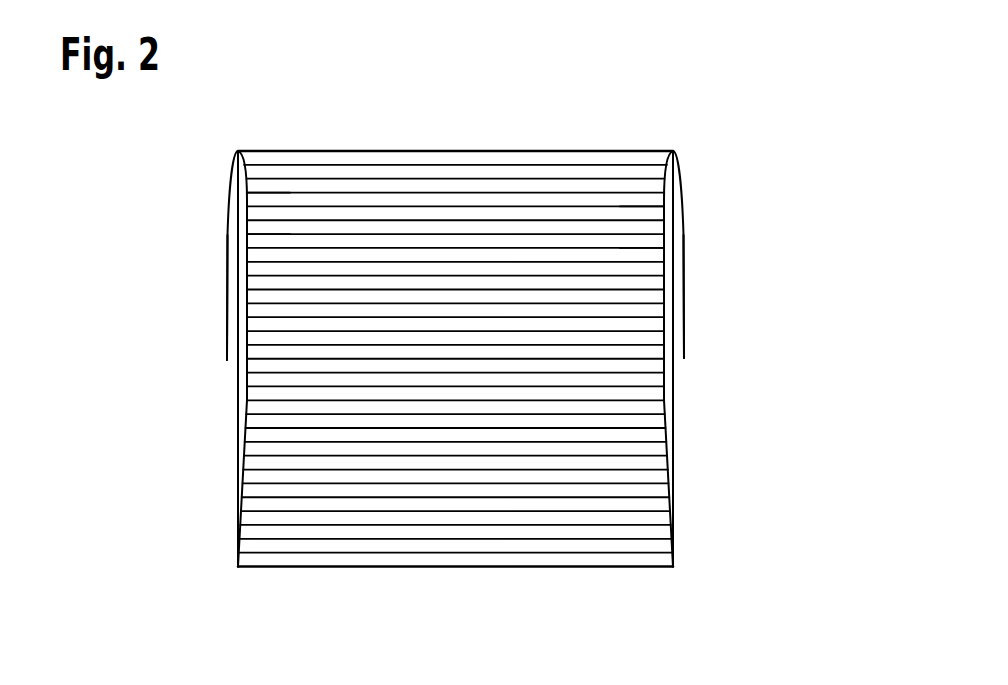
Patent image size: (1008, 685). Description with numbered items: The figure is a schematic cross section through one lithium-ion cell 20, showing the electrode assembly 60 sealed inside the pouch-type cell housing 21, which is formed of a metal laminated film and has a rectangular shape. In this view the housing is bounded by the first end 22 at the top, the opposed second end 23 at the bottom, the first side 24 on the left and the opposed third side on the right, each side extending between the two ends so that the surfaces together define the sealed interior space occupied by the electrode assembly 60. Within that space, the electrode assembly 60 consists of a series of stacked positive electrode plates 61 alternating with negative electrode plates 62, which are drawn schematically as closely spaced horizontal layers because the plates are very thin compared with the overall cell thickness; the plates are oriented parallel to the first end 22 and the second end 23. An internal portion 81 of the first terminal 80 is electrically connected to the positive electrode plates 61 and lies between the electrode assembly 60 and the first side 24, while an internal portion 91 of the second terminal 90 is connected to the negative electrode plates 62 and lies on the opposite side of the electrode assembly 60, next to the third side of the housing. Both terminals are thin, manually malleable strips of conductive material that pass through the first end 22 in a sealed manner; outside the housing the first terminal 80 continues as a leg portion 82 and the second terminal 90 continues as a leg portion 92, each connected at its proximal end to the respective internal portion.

The cell 20 is at (172, 157).
The cell housing 21 is at (673, 437).
The first end 22 is at (619, 151).
The second end 23 is at (622, 567).
The first side 24 is at (238, 414).
The electrode assembly 60 is at (323, 540).
The positive electrode plates 61 is at (627, 218).
The negative electrode plates 62 is at (283, 203).
The first terminal 80 is at (228, 288).
The internal portion of first terminal 81 is at (247, 378).
The leg portion of first terminal 82 is at (227, 297).
The second terminal 90 is at (684, 297).
The internal portion of second terminal 91 is at (663, 375).
The leg portion of second terminal 92 is at (684, 296).